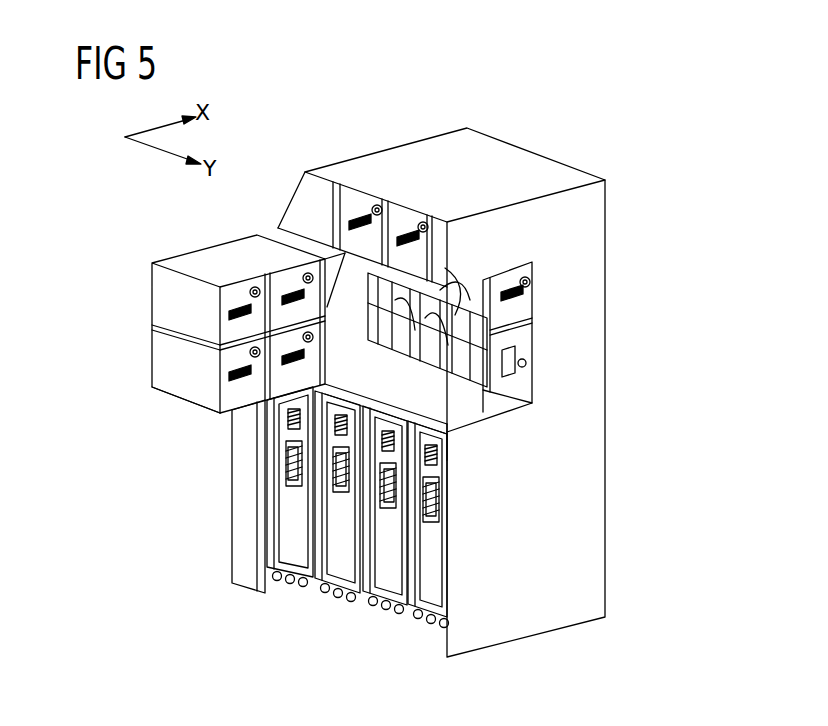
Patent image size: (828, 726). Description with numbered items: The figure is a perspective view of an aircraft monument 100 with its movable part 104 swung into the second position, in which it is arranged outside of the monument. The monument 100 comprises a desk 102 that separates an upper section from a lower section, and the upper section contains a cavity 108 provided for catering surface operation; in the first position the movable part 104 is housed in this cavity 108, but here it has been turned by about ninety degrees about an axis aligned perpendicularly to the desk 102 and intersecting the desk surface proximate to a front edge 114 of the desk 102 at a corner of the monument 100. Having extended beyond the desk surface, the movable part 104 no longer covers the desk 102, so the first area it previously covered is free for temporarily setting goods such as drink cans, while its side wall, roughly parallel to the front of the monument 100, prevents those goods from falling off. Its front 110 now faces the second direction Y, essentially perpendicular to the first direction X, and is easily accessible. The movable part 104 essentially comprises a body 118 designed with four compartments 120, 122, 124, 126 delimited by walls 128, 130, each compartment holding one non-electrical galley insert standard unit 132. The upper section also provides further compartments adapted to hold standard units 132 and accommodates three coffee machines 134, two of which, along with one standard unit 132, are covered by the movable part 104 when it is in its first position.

The aircraft monument 100 is at (600, 150).
The desk 102 is at (483, 405).
The movable part 104 is at (190, 262).
The cavity 108 is at (383, 365).
The front 110 is at (326, 363).
The front edge 114 is at (447, 447).
The body 118 is at (152, 292).
The compartment 120 is at (165, 315).
The compartment 122 is at (196, 396).
The compartment 124 is at (275, 236).
The compartment 126 is at (283, 420).
The wall 128 is at (277, 228).
The wall 130 is at (233, 332).
The non-electrical galley insert (NELI) standard unit 132 is at (243, 290).
The coffee machine 134 is at (450, 300).